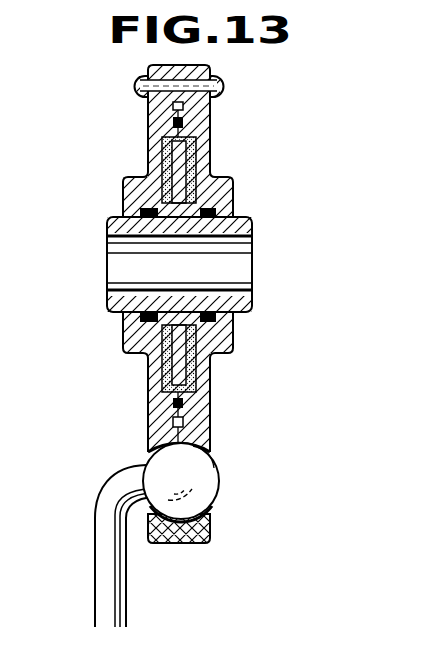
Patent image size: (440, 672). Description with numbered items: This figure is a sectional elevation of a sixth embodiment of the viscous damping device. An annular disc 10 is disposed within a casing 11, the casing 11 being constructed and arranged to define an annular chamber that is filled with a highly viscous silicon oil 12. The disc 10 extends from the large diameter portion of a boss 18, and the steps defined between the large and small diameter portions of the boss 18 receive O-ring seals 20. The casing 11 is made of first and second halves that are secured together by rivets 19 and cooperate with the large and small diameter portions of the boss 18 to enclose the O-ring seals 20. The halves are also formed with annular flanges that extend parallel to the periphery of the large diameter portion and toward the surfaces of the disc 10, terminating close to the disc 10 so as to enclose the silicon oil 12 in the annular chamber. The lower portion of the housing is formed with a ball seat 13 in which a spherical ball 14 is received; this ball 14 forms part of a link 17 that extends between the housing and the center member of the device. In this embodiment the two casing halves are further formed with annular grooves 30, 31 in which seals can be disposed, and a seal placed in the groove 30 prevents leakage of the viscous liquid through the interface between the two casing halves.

The annular disc 10 is at (148, 156).
The casing 11 is at (246, 191).
The silicon oil 12 is at (194, 165).
The ball seat 13 is at (216, 462).
The spherical ball 14 is at (206, 501).
The link 17 is at (95, 568).
The boss 18 is at (252, 228).
The rivets 19 is at (221, 86).
The O-ring seals 20 is at (140, 317).
The annular groove 30 is at (186, 122).
The annular groove 31 is at (186, 421).